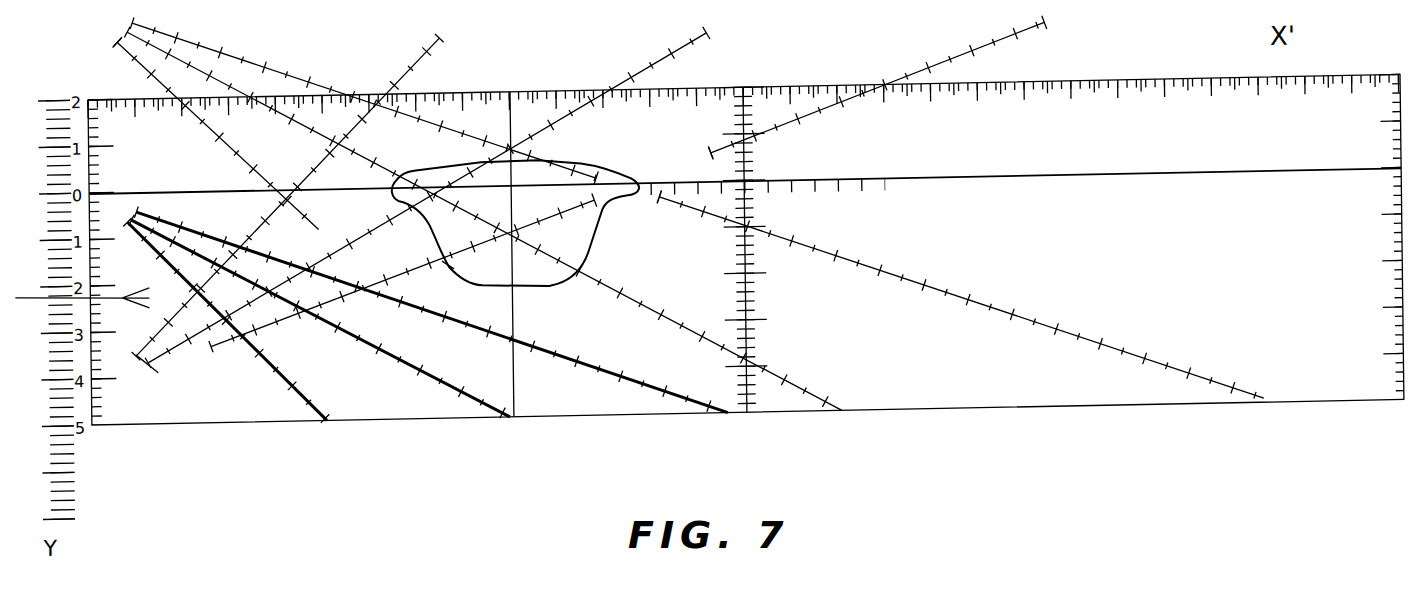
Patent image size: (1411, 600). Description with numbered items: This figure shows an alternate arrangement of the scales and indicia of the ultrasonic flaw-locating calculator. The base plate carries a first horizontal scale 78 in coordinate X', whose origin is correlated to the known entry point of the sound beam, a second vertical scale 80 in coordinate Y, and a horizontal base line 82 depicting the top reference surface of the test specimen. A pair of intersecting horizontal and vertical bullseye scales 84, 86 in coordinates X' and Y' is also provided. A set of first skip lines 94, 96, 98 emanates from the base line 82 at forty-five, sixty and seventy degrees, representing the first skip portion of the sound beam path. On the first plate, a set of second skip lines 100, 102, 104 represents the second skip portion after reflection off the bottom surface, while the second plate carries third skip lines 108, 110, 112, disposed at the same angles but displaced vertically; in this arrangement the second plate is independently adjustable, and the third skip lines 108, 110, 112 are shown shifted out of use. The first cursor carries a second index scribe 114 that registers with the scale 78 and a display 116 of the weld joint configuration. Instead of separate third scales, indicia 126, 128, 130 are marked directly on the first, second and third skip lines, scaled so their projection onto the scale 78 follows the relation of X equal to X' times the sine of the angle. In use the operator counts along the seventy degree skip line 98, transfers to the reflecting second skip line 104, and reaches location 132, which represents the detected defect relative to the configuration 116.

The first horizontal scale 78 is at (1140, 96).
The second vertical scale 80 is at (62, 98).
The horizontal base line 82 is at (1068, 193).
The horizontal bullseye scale 84 is at (848, 205).
The vertical bullseye scale 86 is at (750, 343).
The first skip line 94 is at (312, 397).
The first skip line 96 is at (392, 402).
The first skip line 98 is at (633, 391).
The second skip line 100 is at (158, 329).
The second skip line 102 is at (175, 350).
The second skip line 104 is at (207, 358).
The third skip line 108 is at (120, 44).
The third skip line 110 is at (217, 53).
The third skip line 112 is at (268, 68).
The second index scribe 114 is at (508, 141).
The display of the configuration of the weld joint area 116 is at (598, 238).
The indicia 126 is at (266, 410).
The indicia 128 is at (381, 410).
The indicia 130 is at (725, 418).
The location of the detected defect 132 is at (455, 272).